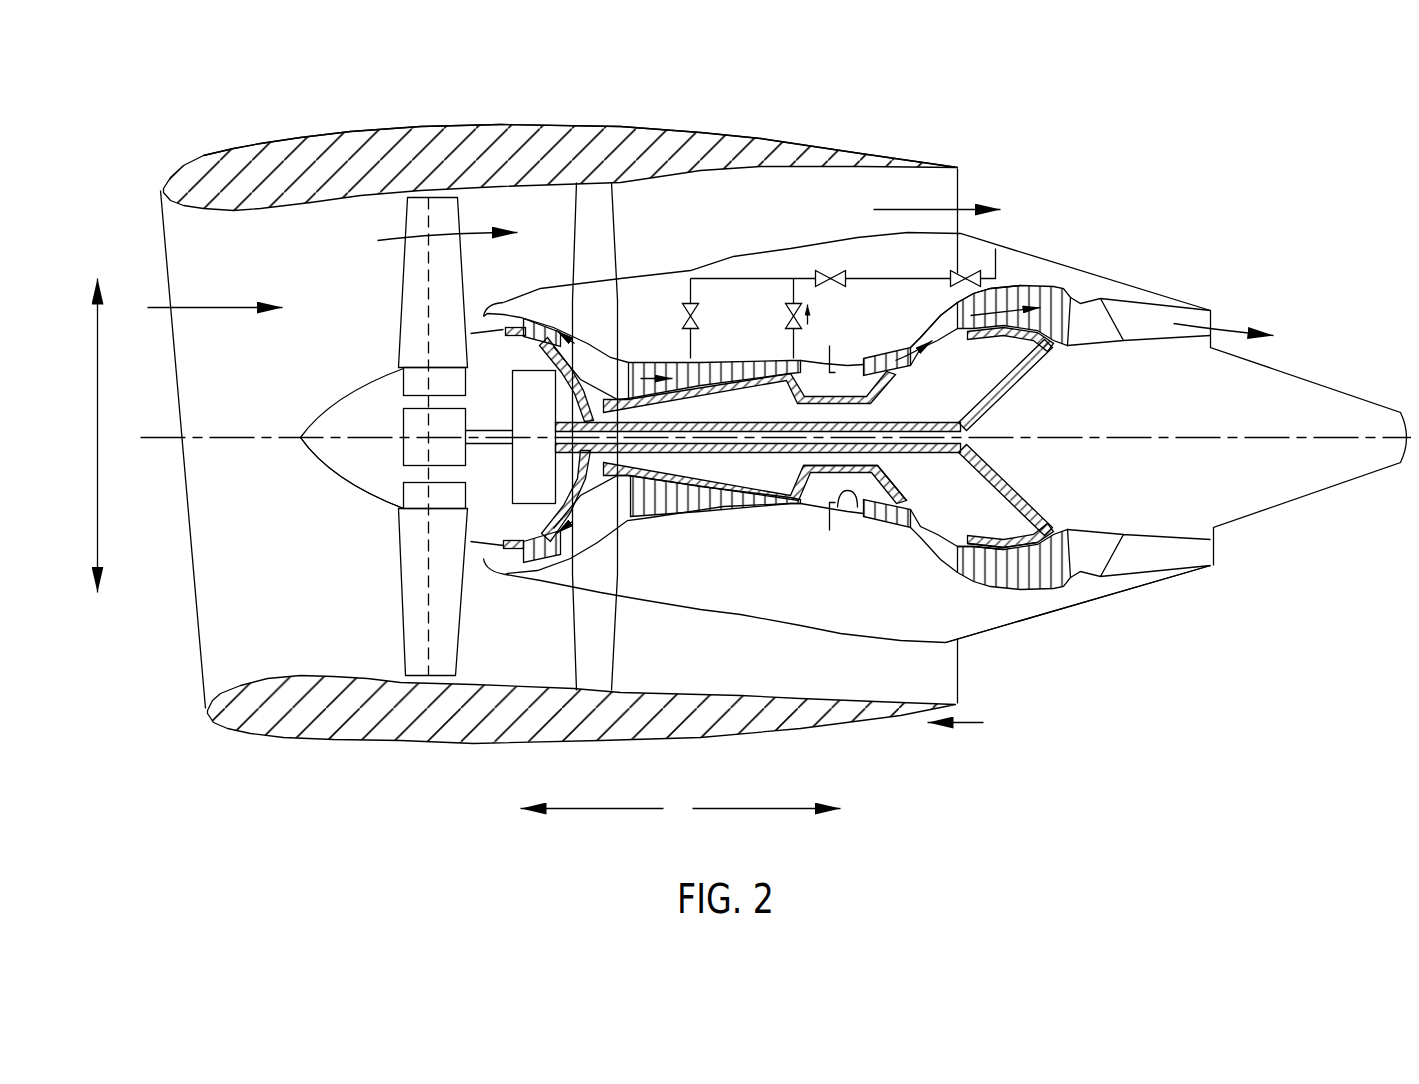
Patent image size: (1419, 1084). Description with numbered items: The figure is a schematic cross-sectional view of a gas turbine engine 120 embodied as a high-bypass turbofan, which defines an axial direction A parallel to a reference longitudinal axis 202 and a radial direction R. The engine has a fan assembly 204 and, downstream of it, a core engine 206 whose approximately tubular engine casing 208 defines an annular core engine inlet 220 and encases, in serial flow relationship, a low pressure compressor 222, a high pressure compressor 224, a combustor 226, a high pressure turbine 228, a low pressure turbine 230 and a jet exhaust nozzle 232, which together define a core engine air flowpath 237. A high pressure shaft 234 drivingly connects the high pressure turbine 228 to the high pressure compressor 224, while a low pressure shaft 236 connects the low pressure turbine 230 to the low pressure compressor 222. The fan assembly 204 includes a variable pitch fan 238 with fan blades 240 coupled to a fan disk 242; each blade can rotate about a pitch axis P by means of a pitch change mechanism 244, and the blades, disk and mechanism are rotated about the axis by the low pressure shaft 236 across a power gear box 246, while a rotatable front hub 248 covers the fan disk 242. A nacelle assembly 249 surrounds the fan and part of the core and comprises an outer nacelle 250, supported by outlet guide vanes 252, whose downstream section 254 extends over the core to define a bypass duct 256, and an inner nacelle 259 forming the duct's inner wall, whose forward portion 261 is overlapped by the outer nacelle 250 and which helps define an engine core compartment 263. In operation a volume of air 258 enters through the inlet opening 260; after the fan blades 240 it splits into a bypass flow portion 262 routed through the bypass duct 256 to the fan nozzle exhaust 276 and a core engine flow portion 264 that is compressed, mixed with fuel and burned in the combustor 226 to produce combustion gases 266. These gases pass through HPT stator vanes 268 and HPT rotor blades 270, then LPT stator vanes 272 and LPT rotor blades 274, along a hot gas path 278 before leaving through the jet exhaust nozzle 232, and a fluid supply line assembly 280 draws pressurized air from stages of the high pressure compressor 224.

The gas turbine engine 120 is at (1113, 155).
The longitudinal axis 202 is at (1160, 434).
The fan assembly 204 is at (300, 230).
The core engine 206 is at (732, 323).
The engine casing 208 is at (723, 508).
The annular core engine inlet 220 is at (520, 558).
The low pressure compressor 222 is at (584, 494).
The high pressure compressor 224 is at (655, 522).
The combustor 226 is at (848, 512).
The high pressure turbine 228 is at (920, 517).
The low pressure turbine 230 is at (1050, 578).
The jet exhaust nozzle 232 is at (1120, 560).
The high pressure shaft 234 is at (900, 392).
The low pressure shaft 236 is at (975, 417).
The core engine air flowpath 237 is at (595, 532).
The variable pitch fan 238 is at (352, 489).
The fan blades 240 is at (398, 616).
The fan disk 242 is at (410, 382).
The pitch change mechanism 244 is at (403, 420).
The power gear box 246 is at (535, 384).
The rotatable front hub 248 is at (318, 446).
The nacelle assembly 249 is at (967, 673).
The outer nacelle 250 is at (460, 744).
The outlet guide vanes 252 is at (618, 234).
The downstream section 254 is at (847, 145).
The bypass duct 256 is at (738, 226).
The volume of air 258 is at (192, 308).
The inner nacelle 259 is at (850, 641).
The inlet opening 260 is at (203, 688).
The forward portion 261 is at (572, 338).
The bypass flow portion 262 is at (413, 233).
The engine core compartment 263 is at (631, 326).
The core engine flow portion 264 is at (487, 313).
The combustion gases 266 is at (1003, 305).
The HPT stator vanes 268 is at (860, 518).
The HPT rotor blades 270 is at (887, 484).
The LPT stator vanes 272 is at (963, 577).
The LPT rotor blades 274 is at (982, 580).
The fan nozzle exhaust 276 is at (960, 187).
The hot gas path 278 is at (937, 320).
The fluid supply line assembly 280 is at (833, 263).
The pitch axis P is at (430, 217).
The radial direction R is at (98, 436).
The axial direction A is at (681, 809).